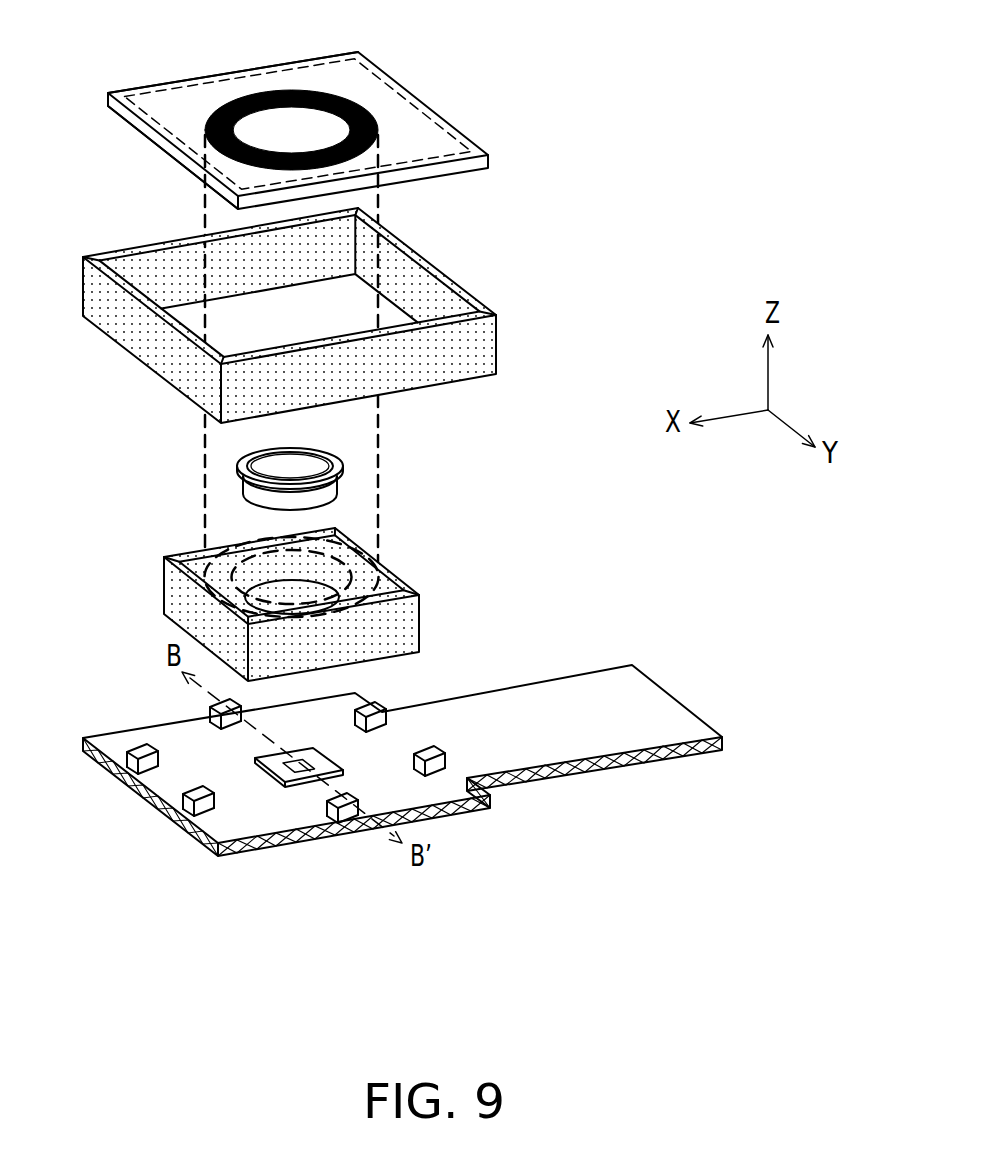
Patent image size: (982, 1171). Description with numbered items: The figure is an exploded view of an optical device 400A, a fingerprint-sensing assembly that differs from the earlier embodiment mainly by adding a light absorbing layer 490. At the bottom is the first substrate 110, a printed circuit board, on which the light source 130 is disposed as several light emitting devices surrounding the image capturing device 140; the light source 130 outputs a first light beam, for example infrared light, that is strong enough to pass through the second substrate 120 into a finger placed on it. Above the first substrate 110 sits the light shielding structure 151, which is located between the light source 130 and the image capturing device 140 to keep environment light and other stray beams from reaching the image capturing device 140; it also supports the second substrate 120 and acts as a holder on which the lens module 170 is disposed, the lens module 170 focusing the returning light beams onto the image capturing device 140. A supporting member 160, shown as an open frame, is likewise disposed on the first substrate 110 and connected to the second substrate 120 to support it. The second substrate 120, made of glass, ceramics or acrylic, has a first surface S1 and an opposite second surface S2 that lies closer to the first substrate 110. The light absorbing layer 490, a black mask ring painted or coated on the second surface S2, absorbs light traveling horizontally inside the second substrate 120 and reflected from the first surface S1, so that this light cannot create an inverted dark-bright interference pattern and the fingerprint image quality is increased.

The first substrate 110 is at (557, 738).
The second substrate 120 is at (423, 130).
The light source 130 is at (345, 812).
The image capturing device 140 is at (263, 760).
The light shielding structure 151 is at (390, 587).
The supporting member 160 is at (433, 292).
The lens module 170 is at (338, 468).
The light absorbing layer 490 is at (340, 90).
The first surface S1 is at (150, 102).
The second surface S2 is at (146, 147).
The optical device 400A is at (855, 995).